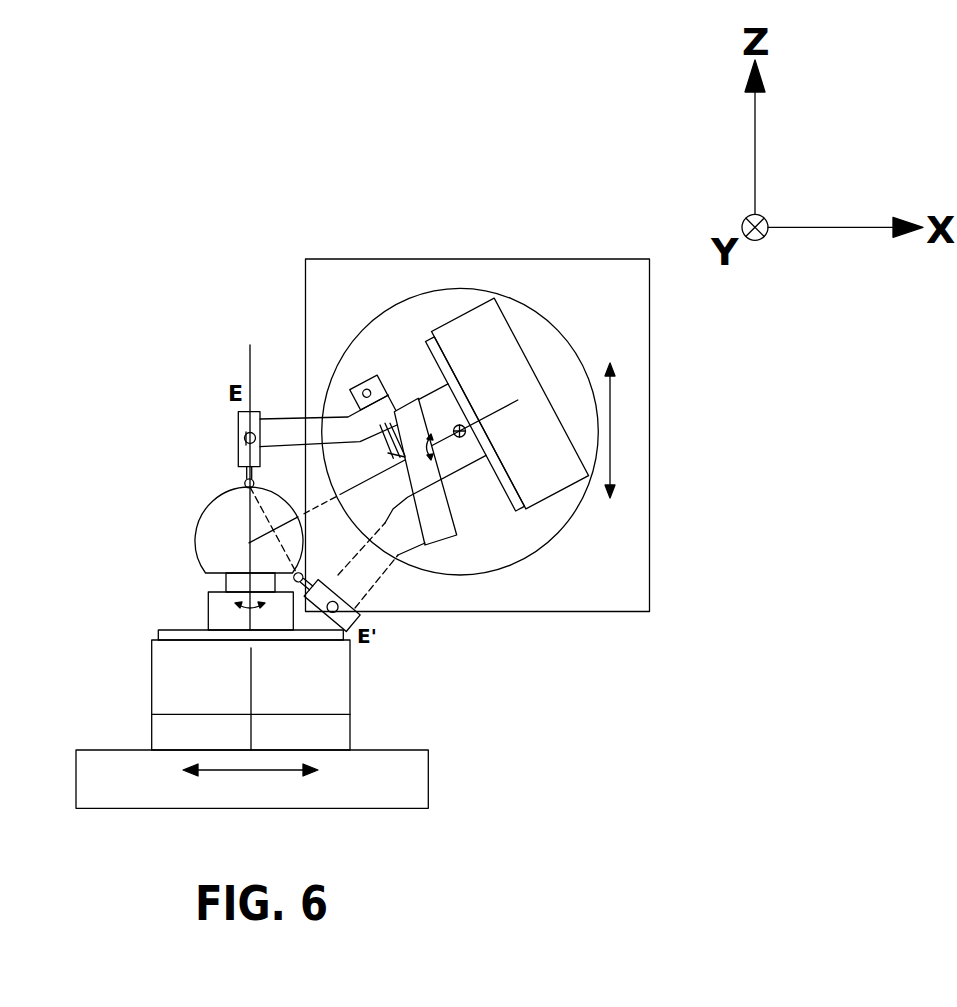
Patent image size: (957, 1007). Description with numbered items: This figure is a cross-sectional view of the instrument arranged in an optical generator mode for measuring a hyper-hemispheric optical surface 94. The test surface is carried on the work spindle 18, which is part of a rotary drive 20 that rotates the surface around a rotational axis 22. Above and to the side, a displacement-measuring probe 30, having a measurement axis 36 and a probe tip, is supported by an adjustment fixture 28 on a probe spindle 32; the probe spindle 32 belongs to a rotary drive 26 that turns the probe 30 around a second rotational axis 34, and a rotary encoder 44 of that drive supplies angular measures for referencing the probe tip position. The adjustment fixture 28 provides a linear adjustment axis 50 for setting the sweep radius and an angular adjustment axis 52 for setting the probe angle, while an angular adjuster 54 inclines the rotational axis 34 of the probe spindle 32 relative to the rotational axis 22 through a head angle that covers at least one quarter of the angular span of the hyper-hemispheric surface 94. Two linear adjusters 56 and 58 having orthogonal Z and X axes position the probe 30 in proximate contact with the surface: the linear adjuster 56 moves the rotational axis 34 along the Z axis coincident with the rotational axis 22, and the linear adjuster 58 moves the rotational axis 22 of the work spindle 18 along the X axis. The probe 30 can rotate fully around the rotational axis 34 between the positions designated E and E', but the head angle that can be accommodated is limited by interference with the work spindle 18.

The work spindle 18 is at (212, 608).
The rotary drive 20 is at (222, 694).
The rotational axis 22 is at (252, 673).
The rotary drive 26 is at (458, 329).
The adjustment fixture 28 is at (443, 540).
The displacement-measuring probe 30 is at (238, 419).
The probe spindle 32 is at (407, 400).
The rotational axis 34 is at (497, 413).
The measurement axis 36 is at (250, 352).
The rotary encoder 44 is at (517, 358).
The linear adjustment axis 50 is at (393, 455).
The angular adjustment axis 52 is at (242, 435).
The angular adjuster 54 is at (465, 437).
The linear adjuster 56 is at (618, 400).
The linear adjuster 58 is at (283, 772).
The hyper-hemispheric optical surface 94 is at (208, 514).